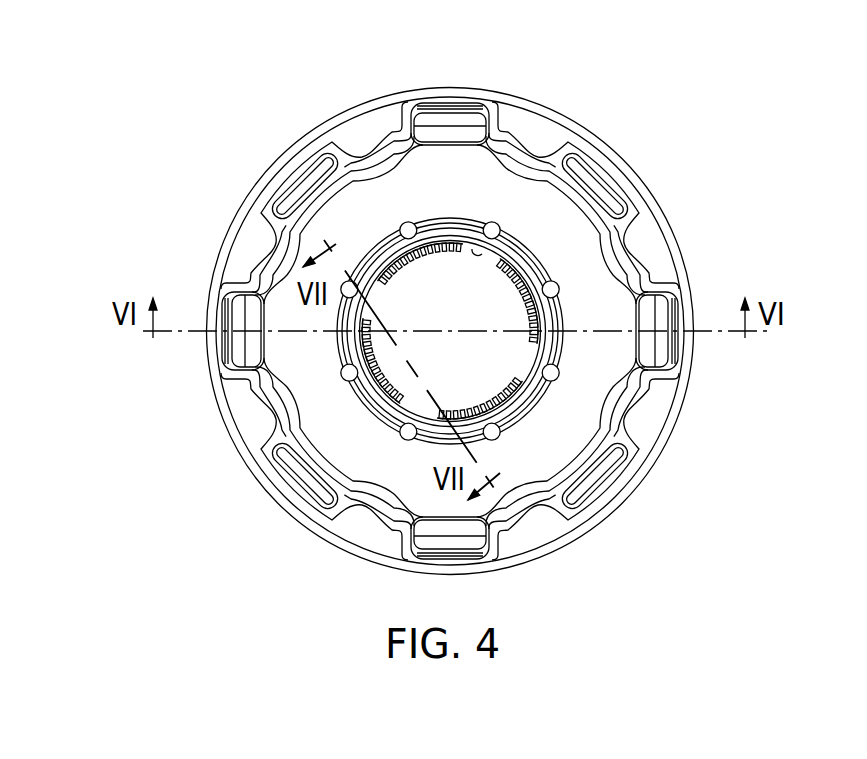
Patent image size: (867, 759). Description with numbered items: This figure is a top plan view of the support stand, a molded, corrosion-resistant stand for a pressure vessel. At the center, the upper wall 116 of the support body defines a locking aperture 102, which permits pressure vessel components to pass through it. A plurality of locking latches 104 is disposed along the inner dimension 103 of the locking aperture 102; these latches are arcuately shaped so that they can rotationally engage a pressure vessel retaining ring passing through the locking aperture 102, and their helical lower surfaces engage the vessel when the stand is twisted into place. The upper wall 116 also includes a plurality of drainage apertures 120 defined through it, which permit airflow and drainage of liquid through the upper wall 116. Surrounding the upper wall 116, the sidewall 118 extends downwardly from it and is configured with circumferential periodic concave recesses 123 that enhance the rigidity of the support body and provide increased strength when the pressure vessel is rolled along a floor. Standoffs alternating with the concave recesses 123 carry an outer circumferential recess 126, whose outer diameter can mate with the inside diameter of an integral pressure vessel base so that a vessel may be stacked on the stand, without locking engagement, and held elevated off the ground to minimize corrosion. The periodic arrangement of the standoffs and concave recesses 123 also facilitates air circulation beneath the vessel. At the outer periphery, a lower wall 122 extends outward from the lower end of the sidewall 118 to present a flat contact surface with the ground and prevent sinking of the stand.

The locking aperture 102 is at (489, 307).
The inner dimension 103 is at (493, 257).
The locking latches 104 is at (498, 233).
The upper wall 116 is at (334, 440).
The sidewall 118 is at (607, 470).
The drainage apertures 120 is at (408, 222).
The lower wall 122 is at (543, 544).
The concave recesses 123 is at (382, 157).
The outer circumferential recess 126 is at (297, 180).